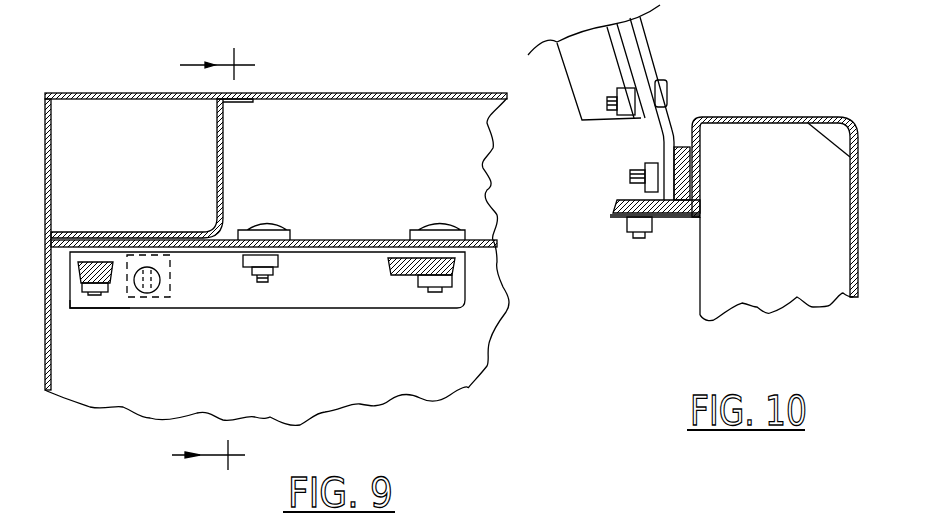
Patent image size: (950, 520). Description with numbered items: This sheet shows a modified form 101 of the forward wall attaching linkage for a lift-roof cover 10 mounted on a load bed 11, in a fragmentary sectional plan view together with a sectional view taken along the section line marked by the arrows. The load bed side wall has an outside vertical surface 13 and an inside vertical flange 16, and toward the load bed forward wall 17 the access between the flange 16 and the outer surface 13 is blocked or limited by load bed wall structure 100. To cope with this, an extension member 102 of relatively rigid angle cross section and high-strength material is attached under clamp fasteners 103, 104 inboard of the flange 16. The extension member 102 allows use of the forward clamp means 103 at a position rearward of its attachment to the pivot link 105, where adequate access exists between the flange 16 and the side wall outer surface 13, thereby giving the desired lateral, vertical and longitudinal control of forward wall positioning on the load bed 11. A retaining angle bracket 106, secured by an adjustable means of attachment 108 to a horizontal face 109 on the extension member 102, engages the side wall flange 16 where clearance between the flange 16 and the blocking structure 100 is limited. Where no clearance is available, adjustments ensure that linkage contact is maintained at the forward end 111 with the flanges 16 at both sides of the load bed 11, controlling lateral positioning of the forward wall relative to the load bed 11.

In FIG. 9, the lift-roof cover 10 is at (213, 261).
In FIG. 10, the load bed 11 is at (772, 122).
In FIG. 9, the outside vertical surface 13 is at (343, 95).
In FIG. 9, the inside vertical flange 16 is at (493, 247).
In FIG. 10, the inside vertical flange 16 is at (680, 140).
In FIG. 9, the load bed forward wall 17 is at (52, 150).
In FIG. 9, the load bed wall structure 100 is at (227, 167).
In FIG. 10, the load bed wall structure 100 is at (807, 203).
In FIG. 9, the modified form of linkage 101 is at (410, 302).
In FIG. 9, the extension member 102 is at (312, 265).
In FIG. 10, the extension member 102 is at (618, 213).
In FIG. 9, the forward clamp means 103 is at (270, 278).
In FIG. 9, the clamp fastener 104 is at (452, 282).
In FIG. 9, the pivot link 105 is at (73, 275).
In FIG. 9, the retaining angle bracket 106 is at (170, 290).
In FIG. 10, the retaining angle bracket 106 is at (683, 227).
In FIG. 9, the adjustable means of attachment 108 is at (153, 297).
In FIG. 10, the adjustable means of attachment 108 is at (645, 237).
In FIG. 10, the horizontal face 109 is at (618, 200).
In FIG. 9, the forward end 111 is at (122, 303).